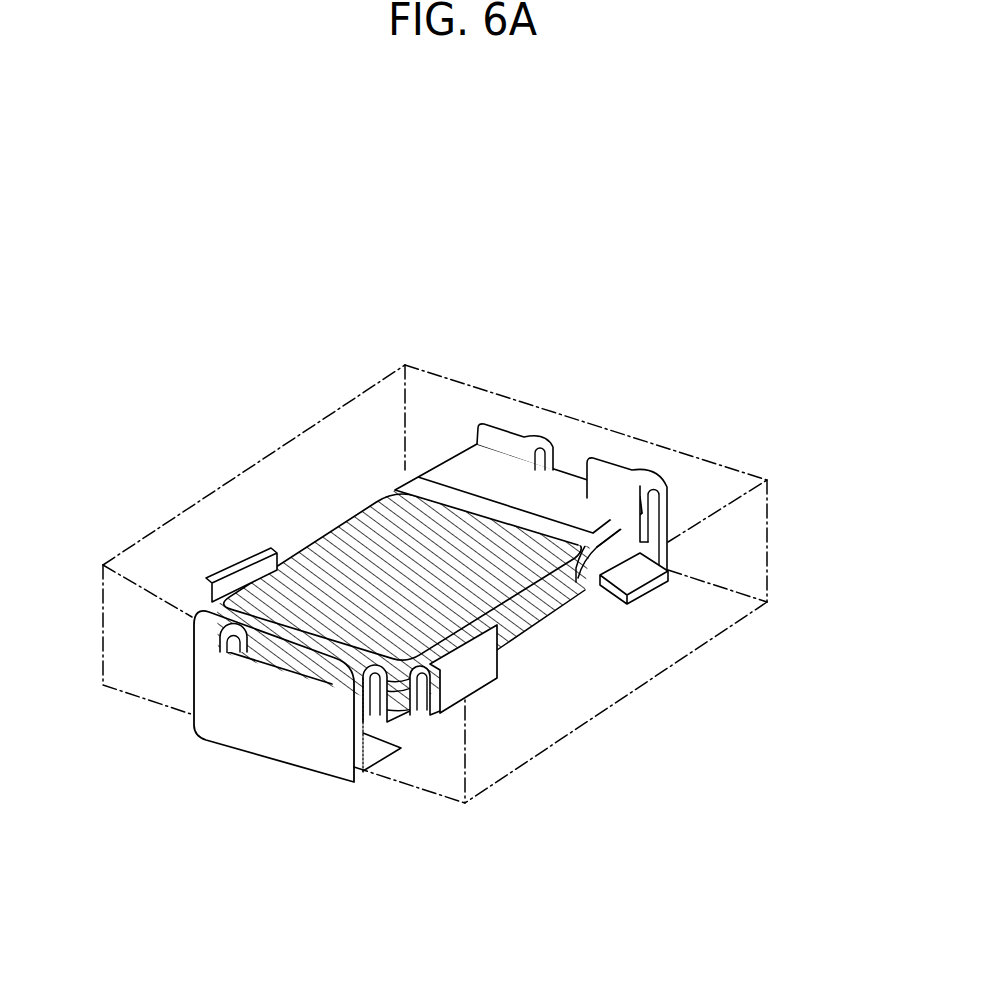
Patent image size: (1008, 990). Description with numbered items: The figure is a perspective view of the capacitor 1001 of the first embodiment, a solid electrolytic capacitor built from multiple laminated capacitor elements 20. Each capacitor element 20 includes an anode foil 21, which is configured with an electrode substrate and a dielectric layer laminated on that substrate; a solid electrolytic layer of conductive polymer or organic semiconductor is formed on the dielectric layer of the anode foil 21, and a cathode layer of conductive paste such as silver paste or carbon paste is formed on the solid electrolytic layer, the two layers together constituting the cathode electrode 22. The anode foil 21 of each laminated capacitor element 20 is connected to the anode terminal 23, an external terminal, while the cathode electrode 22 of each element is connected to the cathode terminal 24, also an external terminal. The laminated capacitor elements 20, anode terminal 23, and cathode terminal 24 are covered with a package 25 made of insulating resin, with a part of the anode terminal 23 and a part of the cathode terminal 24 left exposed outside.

The capacitor 1001 is at (795, 212).
The capacitor element 20 is at (340, 527).
The anode foil 21 is at (463, 467).
The cathode electrode 22 is at (300, 552).
The anode terminal 23 is at (523, 432).
The cathode terminal 24 is at (260, 713).
The package 25 is at (705, 470).